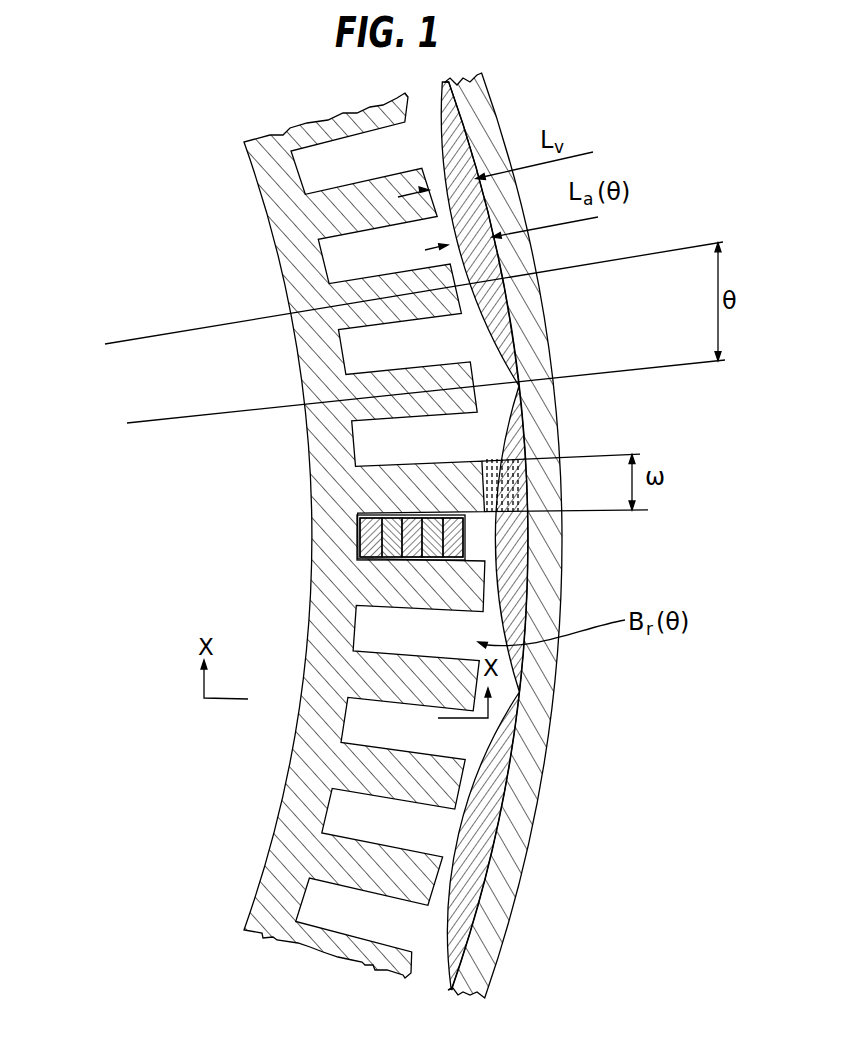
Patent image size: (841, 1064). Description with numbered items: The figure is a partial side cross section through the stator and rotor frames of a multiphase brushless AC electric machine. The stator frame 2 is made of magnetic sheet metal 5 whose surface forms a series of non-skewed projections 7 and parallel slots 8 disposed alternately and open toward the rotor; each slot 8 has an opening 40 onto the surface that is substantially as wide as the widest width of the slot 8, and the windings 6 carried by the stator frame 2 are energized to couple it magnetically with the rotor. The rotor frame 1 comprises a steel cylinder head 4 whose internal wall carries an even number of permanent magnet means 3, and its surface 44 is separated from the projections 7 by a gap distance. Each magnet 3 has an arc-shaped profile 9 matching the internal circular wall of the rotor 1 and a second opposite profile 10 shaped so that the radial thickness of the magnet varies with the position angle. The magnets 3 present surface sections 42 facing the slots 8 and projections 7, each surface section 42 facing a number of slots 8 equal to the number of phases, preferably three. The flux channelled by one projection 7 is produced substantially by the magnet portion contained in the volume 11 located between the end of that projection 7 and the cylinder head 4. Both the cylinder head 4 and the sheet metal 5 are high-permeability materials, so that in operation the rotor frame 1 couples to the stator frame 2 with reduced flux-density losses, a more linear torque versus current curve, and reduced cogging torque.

The rotor frame 1 is at (533, 535).
The stator frame 2 is at (348, 535).
The permanent magnet means 3 is at (531, 841).
The cylinder head 4 is at (530, 715).
The magnetic sheet metal 5 is at (308, 763).
The windings 6 is at (357, 533).
The projections 7 is at (565, 539).
The slots 8 is at (388, 632).
The arc-shaped profile 9 is at (514, 779).
The second opposite profile 10 is at (444, 830).
The volume 11 is at (526, 481).
The opening 40 is at (495, 628).
The surface sections 42 is at (485, 577).
The surface 44 is at (510, 429).